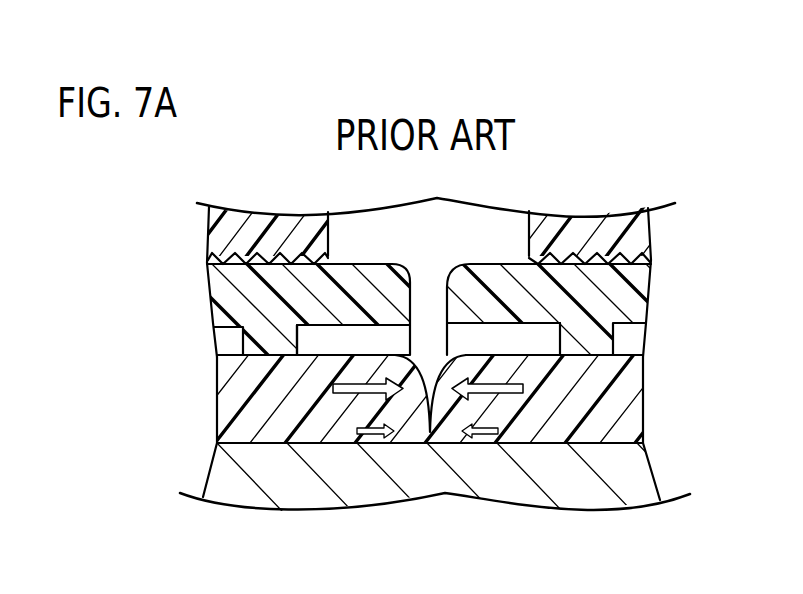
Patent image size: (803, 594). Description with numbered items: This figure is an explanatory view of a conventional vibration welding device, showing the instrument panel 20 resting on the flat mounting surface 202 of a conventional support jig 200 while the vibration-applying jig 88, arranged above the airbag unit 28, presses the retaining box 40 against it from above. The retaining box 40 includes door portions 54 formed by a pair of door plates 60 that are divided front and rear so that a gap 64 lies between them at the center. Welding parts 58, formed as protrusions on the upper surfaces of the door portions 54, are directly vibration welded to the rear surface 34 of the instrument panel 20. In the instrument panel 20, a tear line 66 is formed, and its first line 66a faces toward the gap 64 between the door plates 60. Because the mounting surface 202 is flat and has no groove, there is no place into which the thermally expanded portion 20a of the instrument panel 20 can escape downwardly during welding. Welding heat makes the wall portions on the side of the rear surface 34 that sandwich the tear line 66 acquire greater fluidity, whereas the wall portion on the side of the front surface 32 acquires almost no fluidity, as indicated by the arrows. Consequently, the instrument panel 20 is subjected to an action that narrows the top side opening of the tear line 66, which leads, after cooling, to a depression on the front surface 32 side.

The vibration-applying jig 88 is at (275, 226).
The retaining box 40 is at (306, 283).
The airbag unit 28 is at (199, 291).
The rear surface 34 is at (346, 352).
The gap 64 is at (427, 287).
The door plates 60 is at (583, 283).
The door portions 54 is at (583, 283).
The welding parts 58 is at (606, 343).
The first line 66a is at (452, 379).
The tear line 66 is at (431, 380).
The instrument panel 20 is at (426, 436).
The mounting surface 202 is at (233, 443).
The thermally expanded portion 20a is at (434, 443).
The front surface 32 is at (620, 443).
The support jig 200 is at (199, 476).